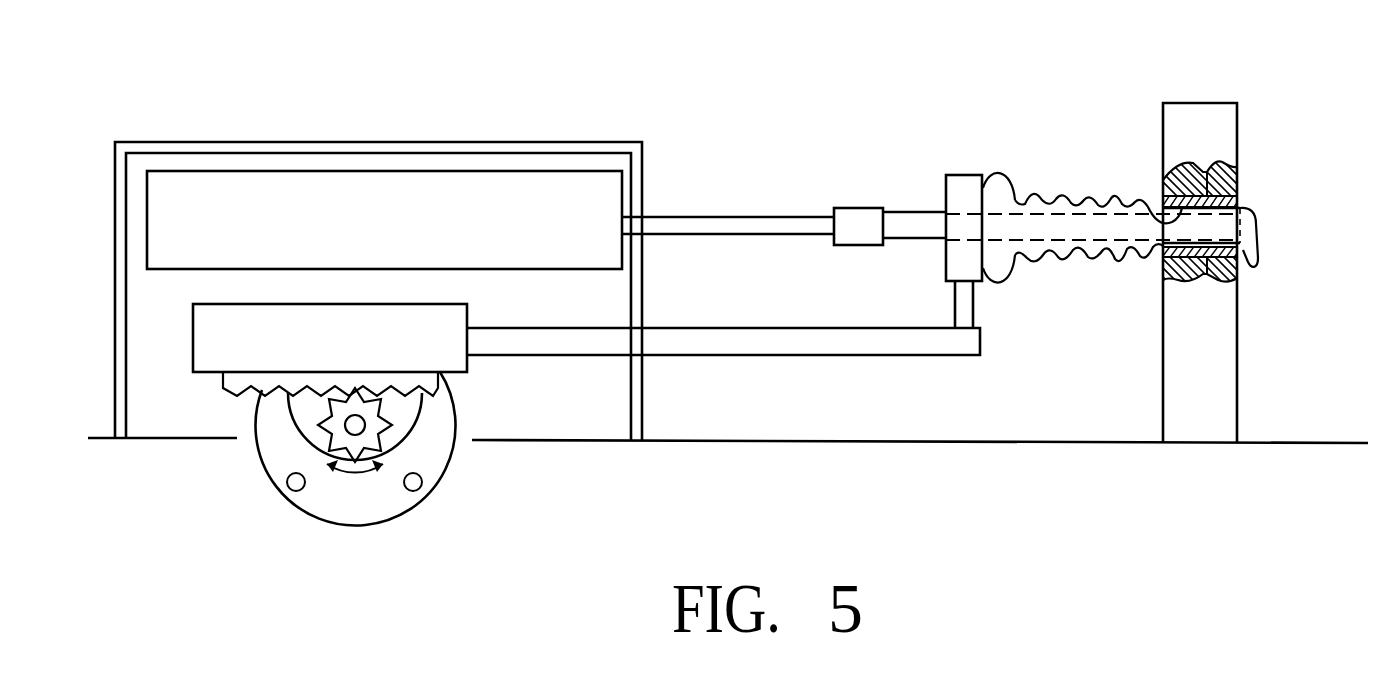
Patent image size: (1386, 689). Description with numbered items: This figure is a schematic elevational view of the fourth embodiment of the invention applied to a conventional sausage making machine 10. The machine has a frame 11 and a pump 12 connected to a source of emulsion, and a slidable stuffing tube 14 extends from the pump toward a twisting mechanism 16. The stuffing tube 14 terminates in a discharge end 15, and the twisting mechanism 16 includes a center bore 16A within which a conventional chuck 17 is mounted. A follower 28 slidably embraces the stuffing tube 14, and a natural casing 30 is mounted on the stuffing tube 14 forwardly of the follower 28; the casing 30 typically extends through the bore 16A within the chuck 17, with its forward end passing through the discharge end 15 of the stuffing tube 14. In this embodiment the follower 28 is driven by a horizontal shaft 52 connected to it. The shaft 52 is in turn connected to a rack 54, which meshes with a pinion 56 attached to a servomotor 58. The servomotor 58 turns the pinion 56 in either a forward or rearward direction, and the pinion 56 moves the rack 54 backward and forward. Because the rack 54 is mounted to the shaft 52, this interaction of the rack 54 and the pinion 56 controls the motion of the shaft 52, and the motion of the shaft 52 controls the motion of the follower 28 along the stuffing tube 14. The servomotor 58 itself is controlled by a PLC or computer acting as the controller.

The sausage making machine 10 is at (424, 90).
The frame 11 is at (1040, 443).
The pump 12 is at (533, 198).
The stuffing tube 14 is at (917, 222).
The discharge end 15 is at (1258, 222).
The twisting mechanism 16 is at (1218, 122).
The center bore 16A is at (1148, 207).
The chuck 17 is at (1207, 168).
The follower 28 is at (963, 190).
The natural casing 30 is at (1001, 192).
The horizontal shaft 52 is at (683, 327).
The rack 54 is at (303, 386).
The pinion 56 is at (333, 427).
The servomotor 58 is at (372, 524).